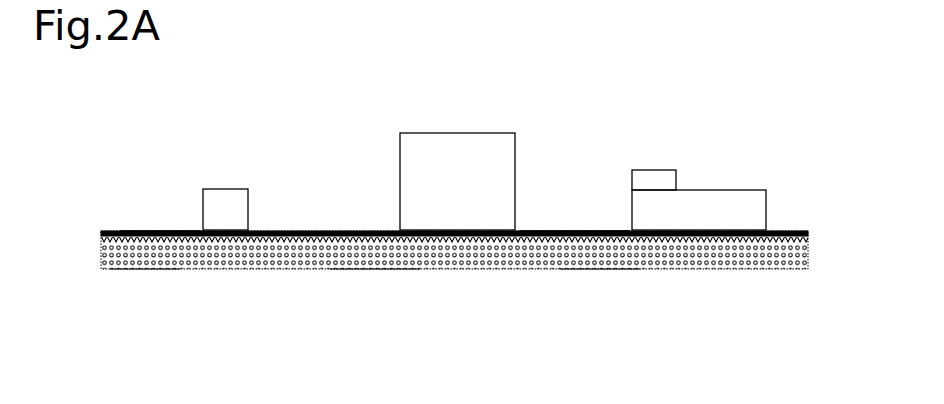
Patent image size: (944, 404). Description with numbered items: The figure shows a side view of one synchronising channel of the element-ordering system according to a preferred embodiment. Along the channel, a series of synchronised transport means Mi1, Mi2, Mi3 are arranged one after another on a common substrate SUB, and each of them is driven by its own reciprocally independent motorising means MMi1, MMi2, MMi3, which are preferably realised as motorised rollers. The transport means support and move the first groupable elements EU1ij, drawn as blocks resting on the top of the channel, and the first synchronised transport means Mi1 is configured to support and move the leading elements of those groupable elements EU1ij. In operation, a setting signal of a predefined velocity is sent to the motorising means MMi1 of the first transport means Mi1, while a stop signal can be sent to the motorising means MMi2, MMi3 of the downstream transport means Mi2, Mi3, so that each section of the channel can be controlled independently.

The first synchronised transport means Mi1 is at (158, 230).
The synchronised transport means Mi2 is at (535, 230).
The synchronised transport means Mi3 is at (612, 230).
The motorising means MMi1 is at (132, 250).
The motorising means MMi2 is at (368, 250).
The motorising means MMi3 is at (603, 252).
The first groupable elements EU1ij is at (399, 155).
The substrate / interconnection layers SUB is at (454, 250).